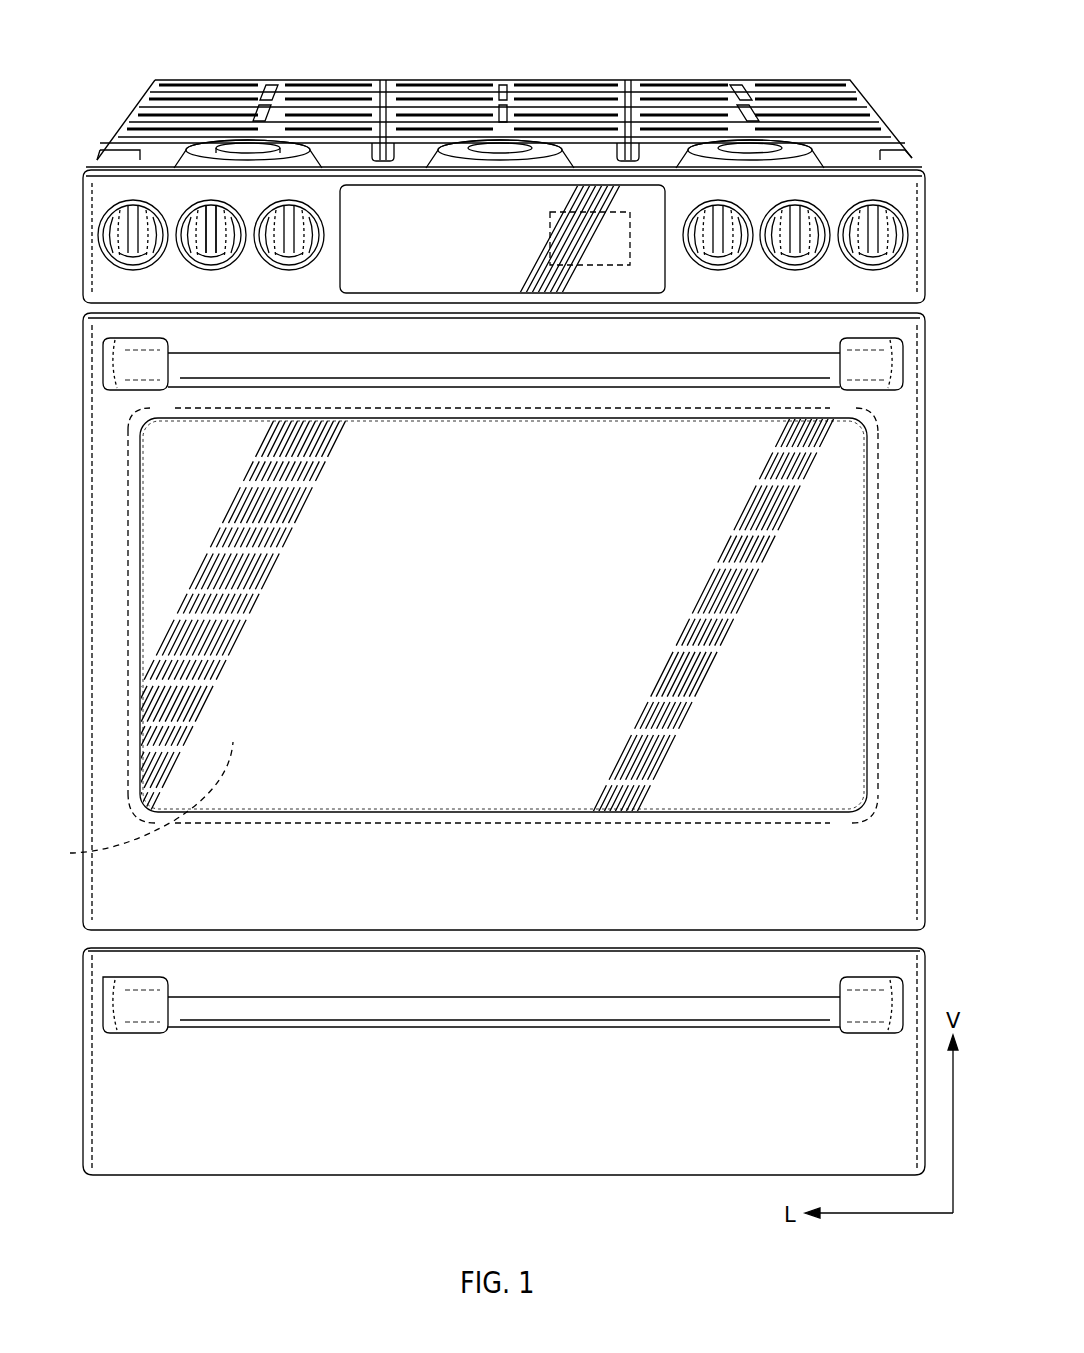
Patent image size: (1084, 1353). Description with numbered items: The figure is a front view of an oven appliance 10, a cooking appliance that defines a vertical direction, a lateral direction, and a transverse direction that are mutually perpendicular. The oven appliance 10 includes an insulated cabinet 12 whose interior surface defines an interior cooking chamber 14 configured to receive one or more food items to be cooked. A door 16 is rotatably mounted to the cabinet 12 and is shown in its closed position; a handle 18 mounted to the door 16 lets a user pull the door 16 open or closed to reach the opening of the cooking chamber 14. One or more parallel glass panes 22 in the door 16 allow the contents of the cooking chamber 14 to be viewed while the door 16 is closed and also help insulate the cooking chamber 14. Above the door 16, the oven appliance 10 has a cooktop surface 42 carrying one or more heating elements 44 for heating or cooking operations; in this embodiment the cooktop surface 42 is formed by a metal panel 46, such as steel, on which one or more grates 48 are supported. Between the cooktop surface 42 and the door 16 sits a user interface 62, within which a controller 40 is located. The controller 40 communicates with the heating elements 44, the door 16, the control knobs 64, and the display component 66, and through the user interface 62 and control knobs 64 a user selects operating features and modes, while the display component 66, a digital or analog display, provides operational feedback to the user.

The oven appliance 10 is at (183, 57).
The cabinet 12 is at (82, 420).
The cooking chamber 14 is at (85, 855).
The door 16 is at (106, 678).
The handle 18 is at (583, 368).
The glass panes 22 is at (815, 648).
The controller 40 is at (608, 265).
The cooktop surface 42 is at (780, 78).
The heating elements 44 is at (765, 152).
The panel 46 is at (155, 157).
The grates 48 is at (875, 127).
The user interface 62 is at (133, 283).
The control knobs 64 is at (212, 236).
The display component 66 is at (478, 233).